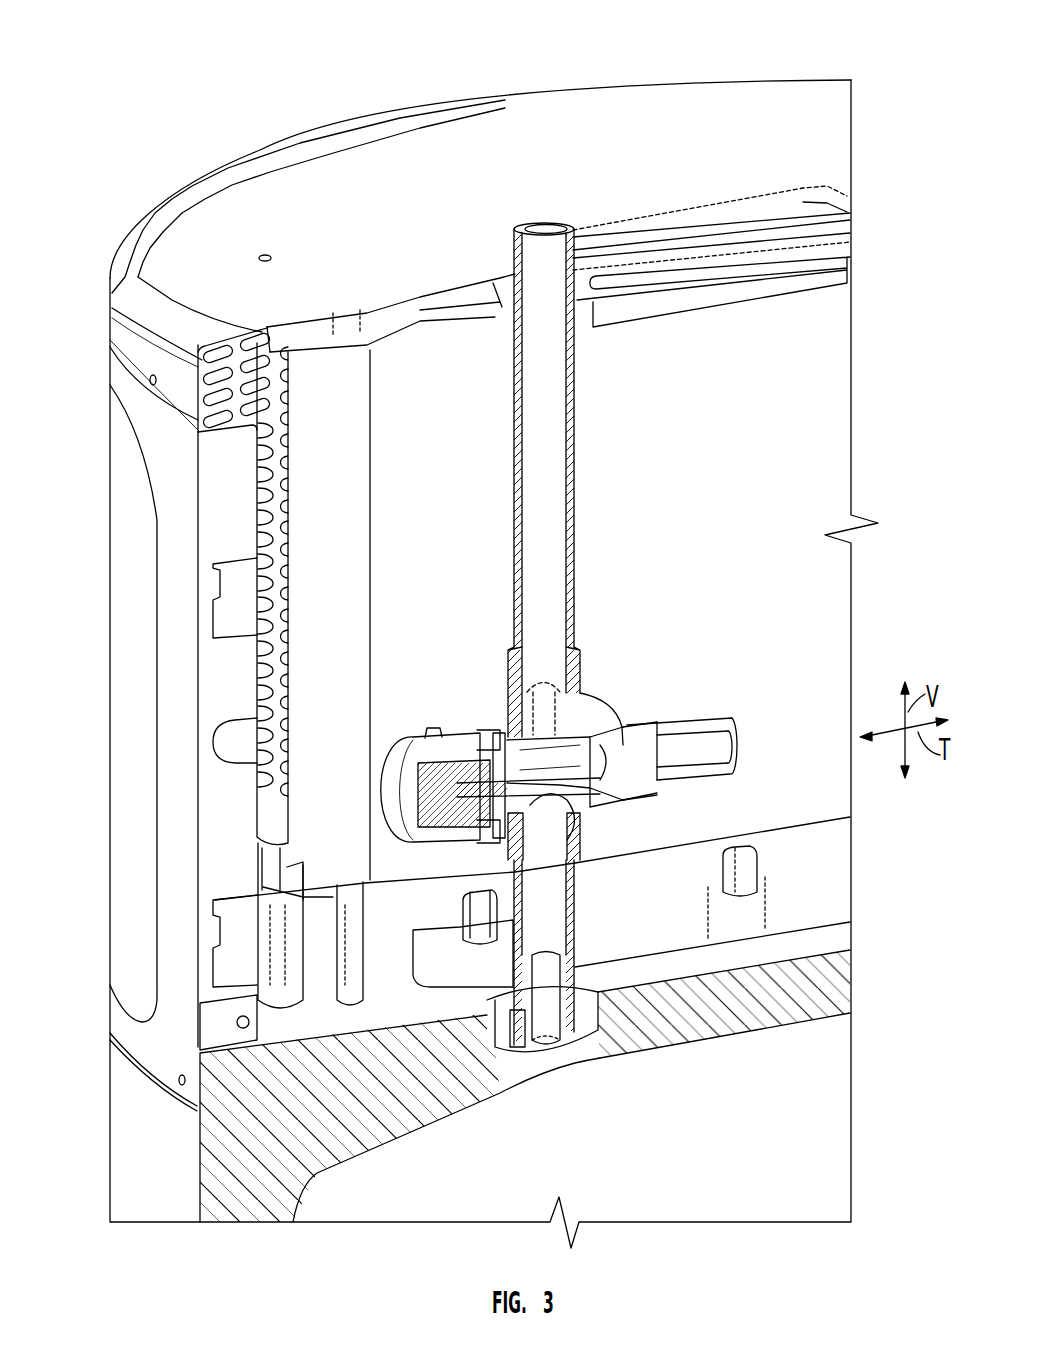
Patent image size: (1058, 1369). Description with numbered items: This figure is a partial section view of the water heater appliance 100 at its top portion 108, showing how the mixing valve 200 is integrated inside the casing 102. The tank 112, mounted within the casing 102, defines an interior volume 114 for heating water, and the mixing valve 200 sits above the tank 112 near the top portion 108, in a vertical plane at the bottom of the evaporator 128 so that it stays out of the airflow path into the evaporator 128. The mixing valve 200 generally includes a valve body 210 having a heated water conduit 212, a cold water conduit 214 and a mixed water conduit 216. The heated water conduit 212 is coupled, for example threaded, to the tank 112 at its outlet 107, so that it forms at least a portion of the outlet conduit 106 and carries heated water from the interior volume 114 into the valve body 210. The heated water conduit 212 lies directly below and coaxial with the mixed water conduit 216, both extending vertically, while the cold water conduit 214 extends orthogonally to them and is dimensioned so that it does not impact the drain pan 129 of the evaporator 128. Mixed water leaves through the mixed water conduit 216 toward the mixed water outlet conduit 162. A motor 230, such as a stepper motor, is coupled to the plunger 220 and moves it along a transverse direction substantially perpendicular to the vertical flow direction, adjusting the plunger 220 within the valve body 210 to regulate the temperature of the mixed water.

The water heater appliance 100 is at (204, 100).
The casing 102 is at (135, 540).
The outlet conduit 106 is at (520, 246).
The outlet 107 is at (541, 1072).
The top portion 108 is at (110, 272).
The tank 112 is at (252, 1200).
The interior volume 114 is at (368, 1186).
The evaporator 128 is at (331, 367).
The drain pan 129 is at (833, 865).
The mixed water outlet conduit 162 is at (583, 452).
The mixing valve 200 is at (471, 693).
The valve body 210 is at (616, 704).
The heated water conduit 212 is at (577, 902).
The cold water conduit 214 is at (702, 722).
The mixed water conduit 216 is at (580, 660).
The plunger 220 is at (577, 833).
The motor 230 is at (397, 775).